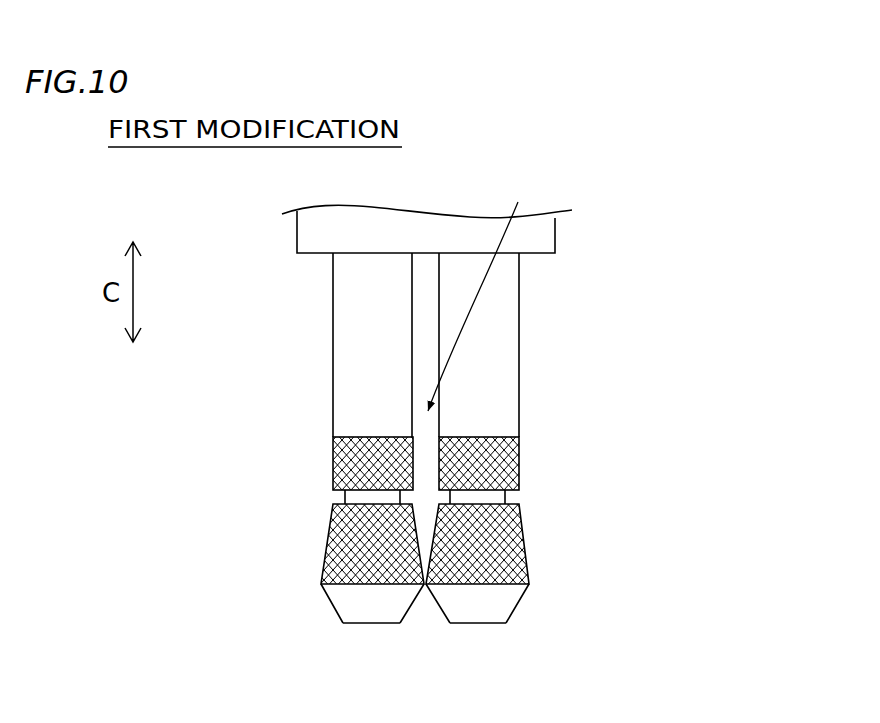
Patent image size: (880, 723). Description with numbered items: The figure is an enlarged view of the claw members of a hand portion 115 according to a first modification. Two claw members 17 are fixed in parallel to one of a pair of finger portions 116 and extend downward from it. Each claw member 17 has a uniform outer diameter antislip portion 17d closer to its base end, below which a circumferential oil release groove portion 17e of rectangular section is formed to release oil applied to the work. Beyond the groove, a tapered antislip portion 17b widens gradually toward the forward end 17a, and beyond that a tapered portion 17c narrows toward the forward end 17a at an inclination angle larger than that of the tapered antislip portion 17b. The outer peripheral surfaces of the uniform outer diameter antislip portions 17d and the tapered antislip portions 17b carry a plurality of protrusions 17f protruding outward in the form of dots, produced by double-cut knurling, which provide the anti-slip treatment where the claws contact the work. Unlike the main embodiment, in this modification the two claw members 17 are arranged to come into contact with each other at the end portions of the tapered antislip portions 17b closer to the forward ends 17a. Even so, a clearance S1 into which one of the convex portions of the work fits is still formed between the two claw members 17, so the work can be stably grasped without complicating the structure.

The hand portion 115 is at (404, 421).
The finger portion 116 is at (440, 235).
The claw member 17 is at (404, 451).
The forward end 17a is at (370, 624).
The tapered antislip portion 17b is at (157, 530).
The tapered portion 17c is at (335, 613).
The uniform outer diameter antislip portion 17d is at (167, 373).
The oil release groove portion 17e is at (345, 494).
The protrusion 17f is at (335, 445).
The clearance S1 is at (481, 292).